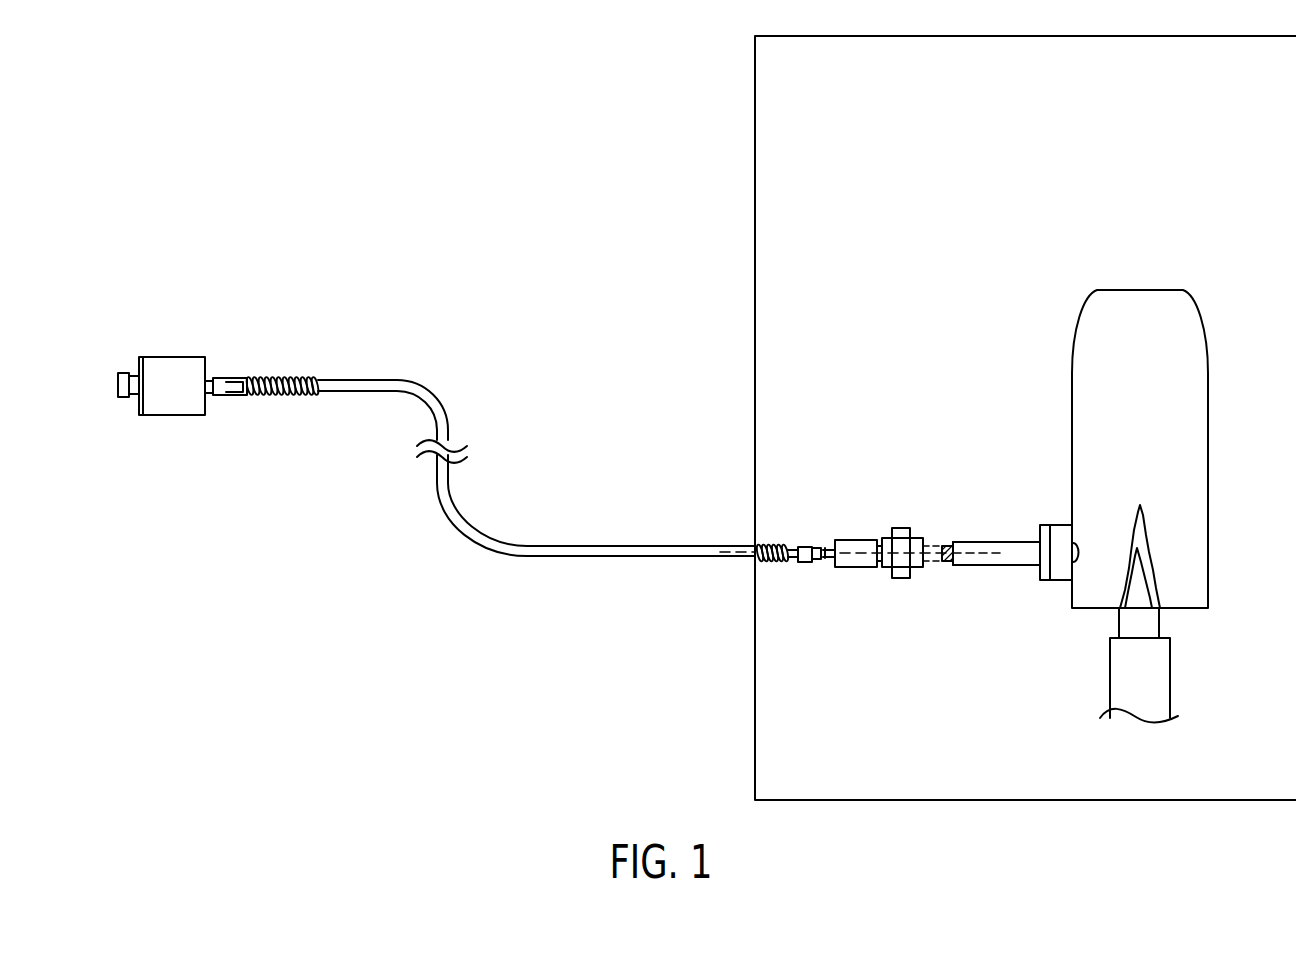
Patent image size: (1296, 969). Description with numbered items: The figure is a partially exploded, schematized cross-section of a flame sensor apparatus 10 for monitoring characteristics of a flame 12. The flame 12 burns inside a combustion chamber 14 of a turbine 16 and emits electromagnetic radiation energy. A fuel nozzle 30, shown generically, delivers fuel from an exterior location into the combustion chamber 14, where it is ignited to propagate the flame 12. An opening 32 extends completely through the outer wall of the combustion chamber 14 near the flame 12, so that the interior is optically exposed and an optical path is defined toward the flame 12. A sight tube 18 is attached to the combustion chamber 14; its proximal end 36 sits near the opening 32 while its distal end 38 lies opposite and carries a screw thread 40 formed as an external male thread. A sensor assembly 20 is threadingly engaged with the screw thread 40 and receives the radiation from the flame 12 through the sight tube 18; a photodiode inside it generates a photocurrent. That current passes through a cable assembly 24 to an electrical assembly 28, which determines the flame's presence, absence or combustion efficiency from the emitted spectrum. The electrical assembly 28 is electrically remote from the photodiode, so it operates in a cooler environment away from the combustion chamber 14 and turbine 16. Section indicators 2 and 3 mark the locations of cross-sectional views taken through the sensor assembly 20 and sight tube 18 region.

The flame sensor apparatus 10 is at (298, 639).
The flame 12 is at (1157, 562).
The combustion chamber 14 is at (1072, 433).
The turbine 16 is at (755, 675).
The sight tube 18 is at (987, 565).
The sensor assembly 20 is at (860, 567).
The cable assembly 24 is at (450, 513).
The electrical assembly 28 is at (163, 357).
The fuel nozzle 30 is at (1170, 683).
The opening 32 is at (1077, 545).
The proximal end 36 is at (1060, 580).
The distal end 38 is at (958, 542).
The screw thread 40 is at (948, 562).
The section line 2 is at (714, 552).
The section line 3 is at (222, 370).